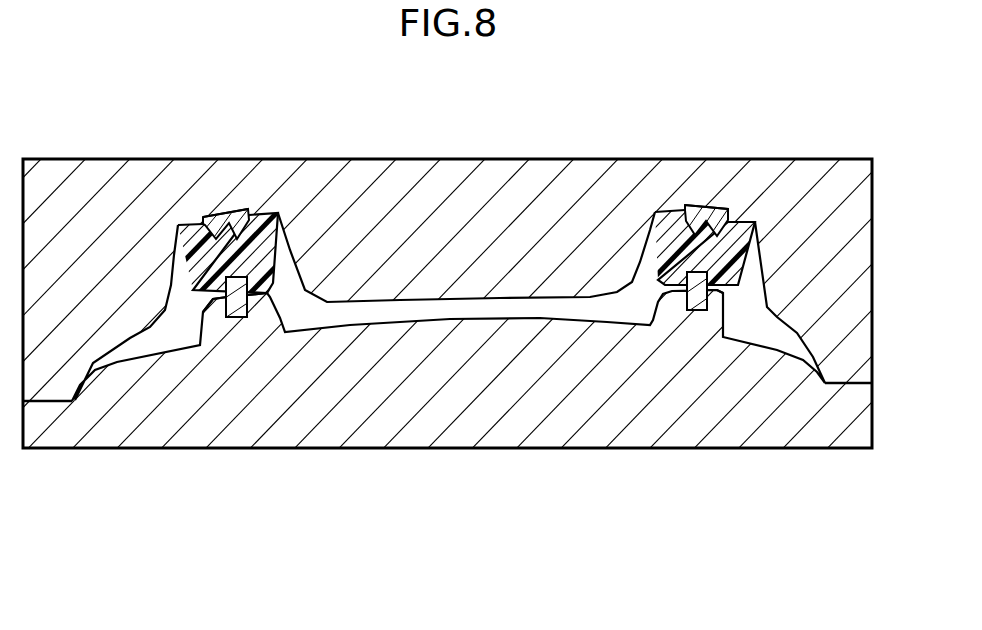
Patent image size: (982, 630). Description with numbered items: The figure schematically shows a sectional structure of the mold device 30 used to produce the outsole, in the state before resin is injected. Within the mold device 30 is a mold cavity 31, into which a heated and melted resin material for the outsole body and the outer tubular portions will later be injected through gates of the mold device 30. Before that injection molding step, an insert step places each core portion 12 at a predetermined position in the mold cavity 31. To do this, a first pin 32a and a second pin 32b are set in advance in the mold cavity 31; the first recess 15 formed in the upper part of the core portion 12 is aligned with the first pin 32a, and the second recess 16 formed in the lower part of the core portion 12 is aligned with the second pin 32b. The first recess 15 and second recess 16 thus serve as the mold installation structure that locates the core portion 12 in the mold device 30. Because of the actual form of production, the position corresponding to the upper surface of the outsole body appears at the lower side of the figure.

The core portion 12 is at (200, 257).
The first recess 15 is at (240, 317).
The second recess 16 is at (212, 209).
The mold device 30 is at (405, 448).
The mold cavity 31 is at (322, 312).
The first pin 32a is at (237, 318).
The second pin 32b is at (237, 212).